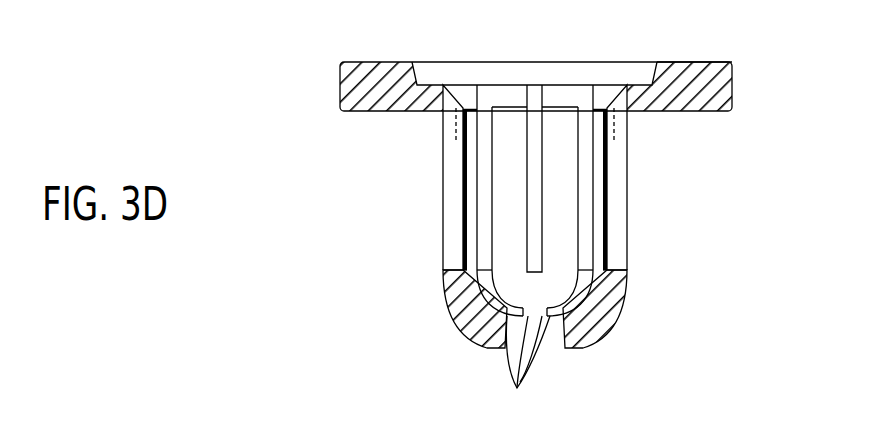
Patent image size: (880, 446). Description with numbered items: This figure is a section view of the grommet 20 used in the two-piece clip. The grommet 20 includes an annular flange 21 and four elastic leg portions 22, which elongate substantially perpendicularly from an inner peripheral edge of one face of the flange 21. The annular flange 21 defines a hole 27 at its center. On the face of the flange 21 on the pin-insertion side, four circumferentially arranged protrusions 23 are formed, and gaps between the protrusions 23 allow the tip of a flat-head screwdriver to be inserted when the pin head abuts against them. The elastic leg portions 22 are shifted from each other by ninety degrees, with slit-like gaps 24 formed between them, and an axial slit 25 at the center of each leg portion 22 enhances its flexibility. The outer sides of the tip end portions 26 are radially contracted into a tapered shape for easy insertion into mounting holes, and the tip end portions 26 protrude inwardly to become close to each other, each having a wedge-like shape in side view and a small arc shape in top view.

The grommet 20 is at (316, 72).
The annular flange 21 is at (732, 103).
The elastic leg portion 22 is at (448, 289).
The protrusion 23 is at (678, 65).
The slit-like gap 24 is at (465, 227).
The axial slit 25 is at (537, 105).
The tip end portion 26 is at (526, 368).
The hole 27 is at (507, 90).